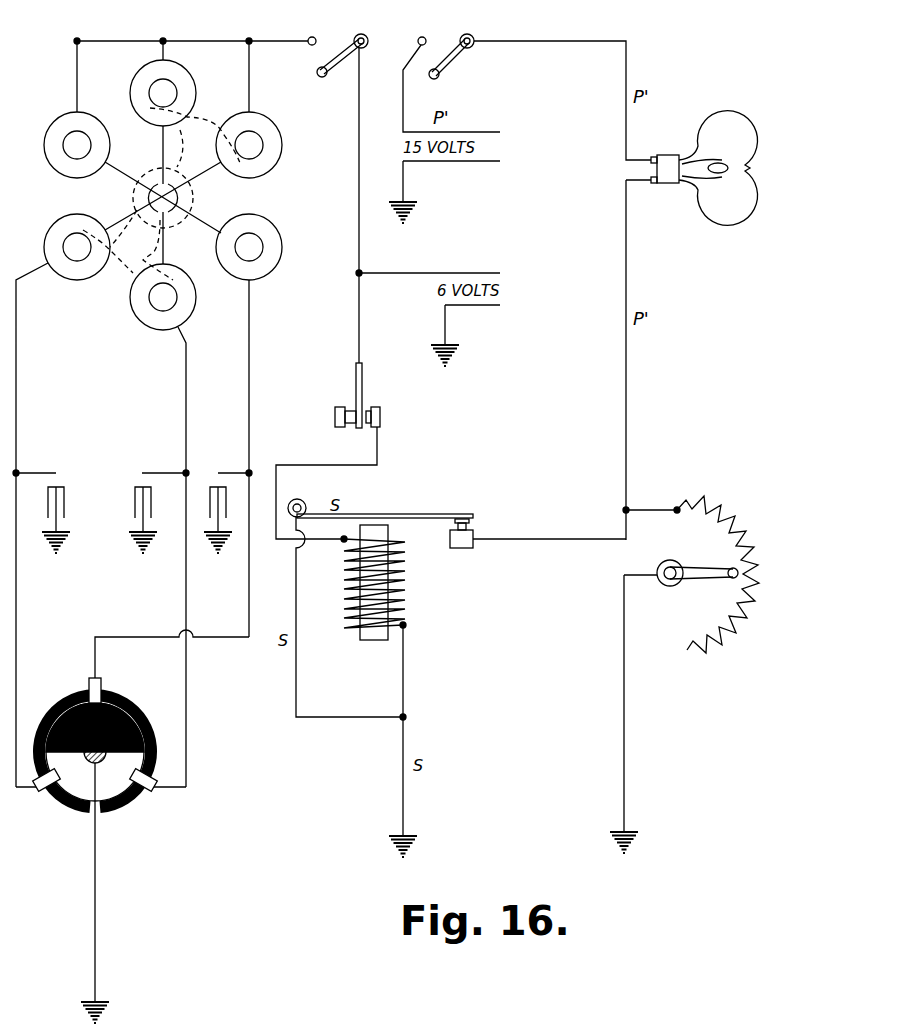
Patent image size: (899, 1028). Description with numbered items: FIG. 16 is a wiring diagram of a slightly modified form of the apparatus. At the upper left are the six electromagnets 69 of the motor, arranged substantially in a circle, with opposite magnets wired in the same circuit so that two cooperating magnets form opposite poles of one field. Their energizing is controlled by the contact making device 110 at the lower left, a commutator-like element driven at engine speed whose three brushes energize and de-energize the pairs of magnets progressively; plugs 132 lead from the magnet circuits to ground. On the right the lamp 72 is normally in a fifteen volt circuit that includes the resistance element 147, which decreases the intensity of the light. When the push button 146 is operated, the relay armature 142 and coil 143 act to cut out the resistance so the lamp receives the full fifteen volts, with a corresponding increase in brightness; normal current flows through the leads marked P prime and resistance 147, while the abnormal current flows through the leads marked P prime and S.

The electromagnets 69 is at (52, 166).
The signal lamp 72 is at (701, 145).
The contact making device 110 is at (133, 714).
The plug connectors 132 is at (137, 493).
The relay armature 142 is at (413, 509).
The relay coil 143 is at (390, 587).
The push button 146 is at (335, 417).
The resistance element 147 is at (739, 533).